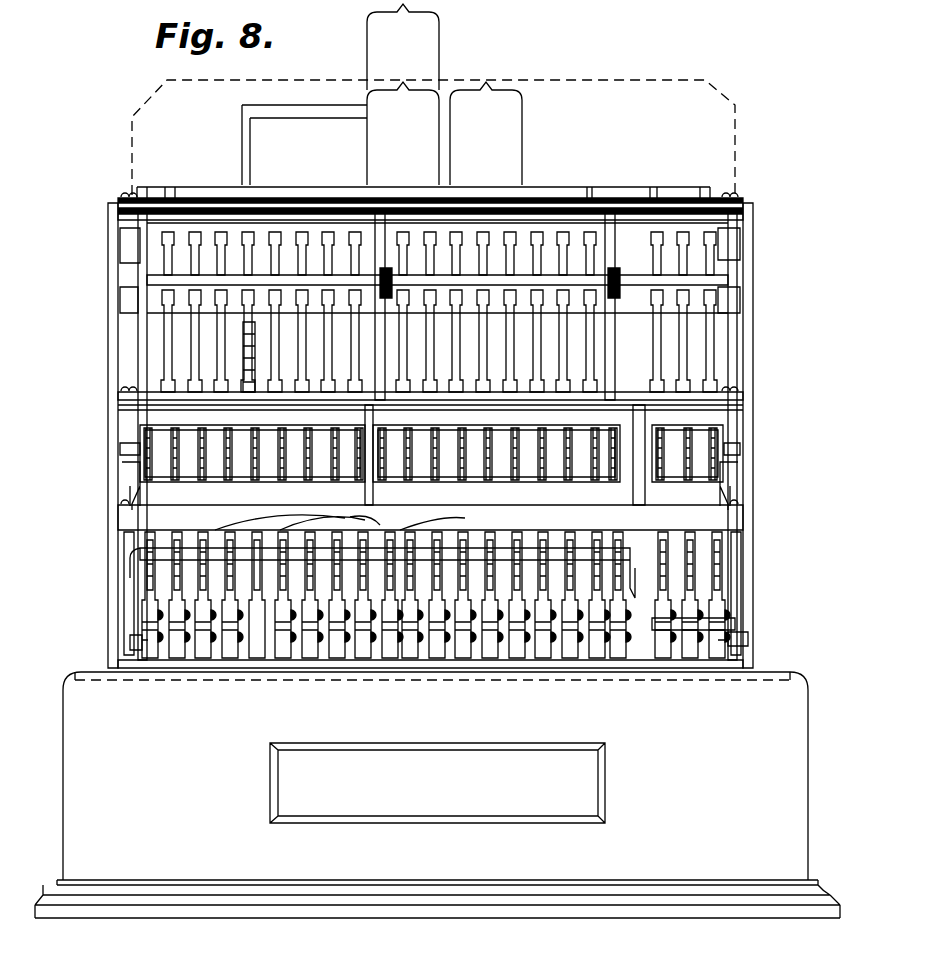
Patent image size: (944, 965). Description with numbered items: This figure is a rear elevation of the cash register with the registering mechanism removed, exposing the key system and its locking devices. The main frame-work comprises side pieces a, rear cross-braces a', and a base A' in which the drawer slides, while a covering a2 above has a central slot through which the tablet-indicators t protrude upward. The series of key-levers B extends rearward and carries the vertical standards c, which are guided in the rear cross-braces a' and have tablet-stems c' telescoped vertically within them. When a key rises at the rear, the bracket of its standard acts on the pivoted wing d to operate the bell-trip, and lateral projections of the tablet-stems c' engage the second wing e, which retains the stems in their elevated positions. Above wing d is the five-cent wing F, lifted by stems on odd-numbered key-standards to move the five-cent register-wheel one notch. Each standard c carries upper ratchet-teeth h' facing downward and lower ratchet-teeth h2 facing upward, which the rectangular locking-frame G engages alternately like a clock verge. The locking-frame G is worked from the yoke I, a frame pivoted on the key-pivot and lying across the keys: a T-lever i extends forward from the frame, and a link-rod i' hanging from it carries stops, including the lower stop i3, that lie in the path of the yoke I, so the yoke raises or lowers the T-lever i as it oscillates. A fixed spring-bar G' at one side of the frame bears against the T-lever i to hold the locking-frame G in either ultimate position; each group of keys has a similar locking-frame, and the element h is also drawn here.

The covering a2 is at (578, 80).
The tablet-indicators t is at (423, 102).
The side pieces a is at (428, 435).
The rear cross-braces a' is at (429, 420).
The second wing e is at (128, 240).
The five-cent wing F is at (150, 280).
The pivoted wing d is at (125, 300).
The tablet-stems c' is at (439, 312).
The upper ratchet-teeth h' is at (240, 357).
The locking-frame G is at (431, 455).
The vertical standards c is at (430, 454).
The lower ratchet-teeth h2 is at (262, 450).
The spring-bar G' is at (438, 483).
The T-lever i is at (432, 441).
The yoke I is at (768, 612).
The link-rod i' is at (435, 593).
The lower stop i3 is at (130, 648).
The lever h is at (253, 595).
The key-levers B is at (180, 660).
The base A' is at (437, 795).